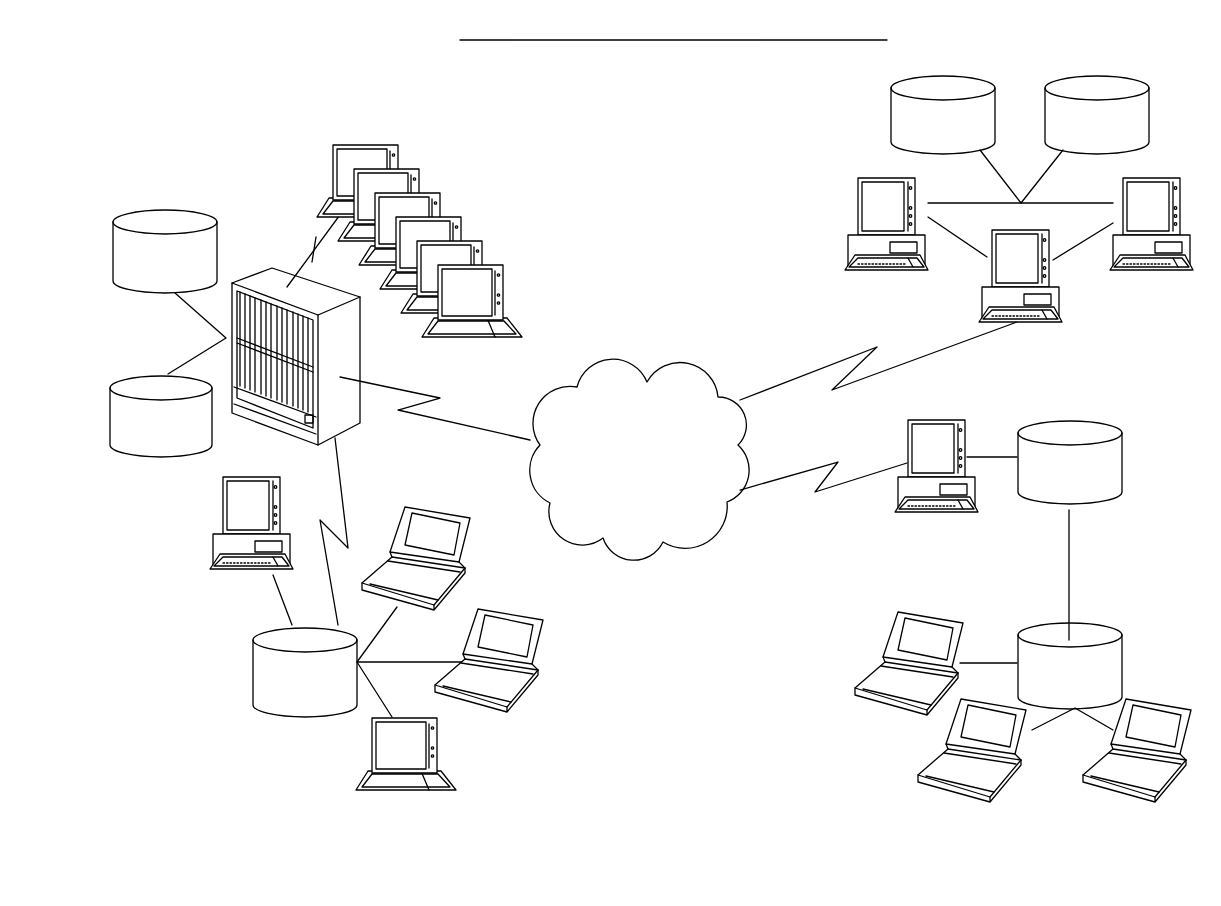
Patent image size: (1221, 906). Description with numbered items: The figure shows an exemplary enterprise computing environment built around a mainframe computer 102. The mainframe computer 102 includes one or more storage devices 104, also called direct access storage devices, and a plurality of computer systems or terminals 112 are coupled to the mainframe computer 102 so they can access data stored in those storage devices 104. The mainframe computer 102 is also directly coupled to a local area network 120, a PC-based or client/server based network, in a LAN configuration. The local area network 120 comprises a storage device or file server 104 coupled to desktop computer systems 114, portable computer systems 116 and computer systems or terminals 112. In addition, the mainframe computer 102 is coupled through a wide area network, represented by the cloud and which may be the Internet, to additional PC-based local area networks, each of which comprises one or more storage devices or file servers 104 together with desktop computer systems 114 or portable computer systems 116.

The mainframe computer 102 is at (350, 409).
The storage device 104 is at (1088, 486).
The computer system or terminal 112 is at (480, 209).
The desktop computer system 114 is at (212, 540).
The portable computer system 116 is at (463, 542).
The local area network 120 is at (177, 782).